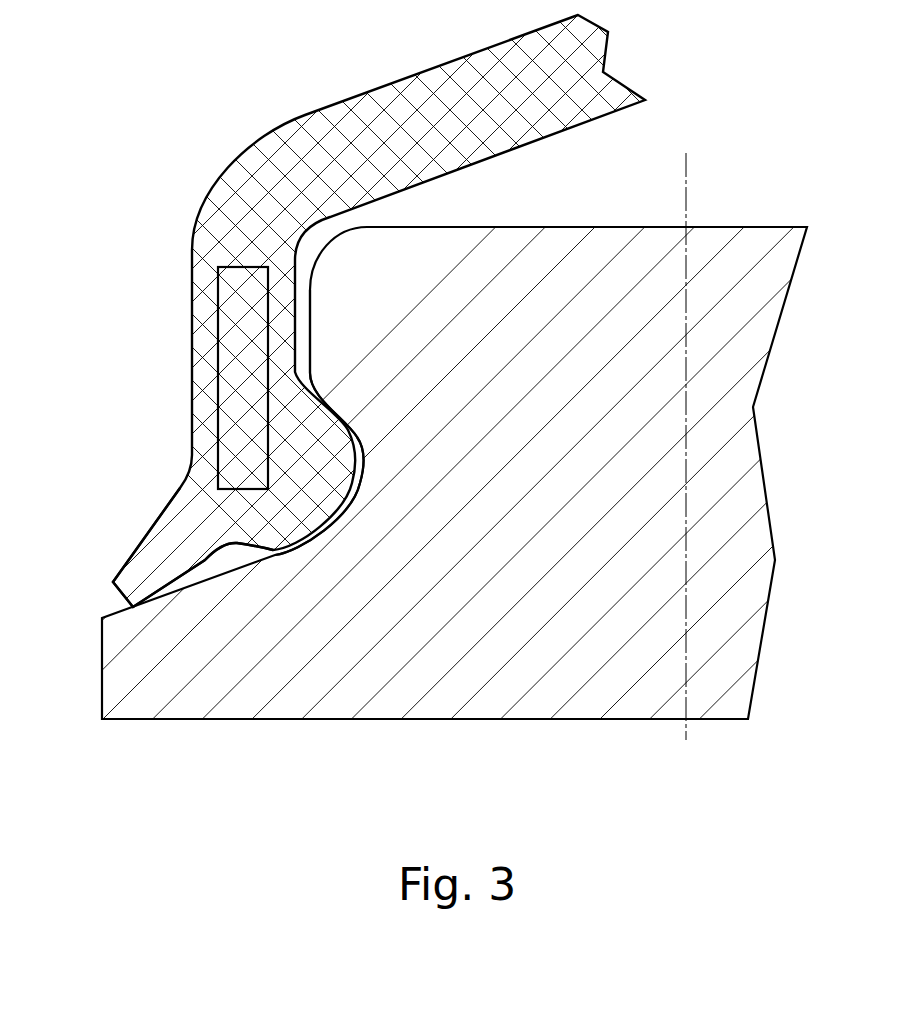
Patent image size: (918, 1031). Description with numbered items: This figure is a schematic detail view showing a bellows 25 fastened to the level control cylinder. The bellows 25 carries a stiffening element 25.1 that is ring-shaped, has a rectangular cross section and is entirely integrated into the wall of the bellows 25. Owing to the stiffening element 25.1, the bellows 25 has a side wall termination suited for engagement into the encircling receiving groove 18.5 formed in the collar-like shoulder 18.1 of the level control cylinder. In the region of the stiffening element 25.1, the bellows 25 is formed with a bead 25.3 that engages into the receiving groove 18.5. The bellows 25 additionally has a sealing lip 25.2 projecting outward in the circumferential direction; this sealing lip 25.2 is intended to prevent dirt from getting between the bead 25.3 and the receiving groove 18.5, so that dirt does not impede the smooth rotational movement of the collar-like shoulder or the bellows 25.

The bellows 25 is at (250, 143).
The stiffening element 25.1 is at (218, 377).
The sealing lip 25.2 is at (110, 573).
The bead 25.3 is at (262, 547).
The collar-like shoulder 18.1 is at (135, 655).
The receiving groove 18.5 is at (340, 535).